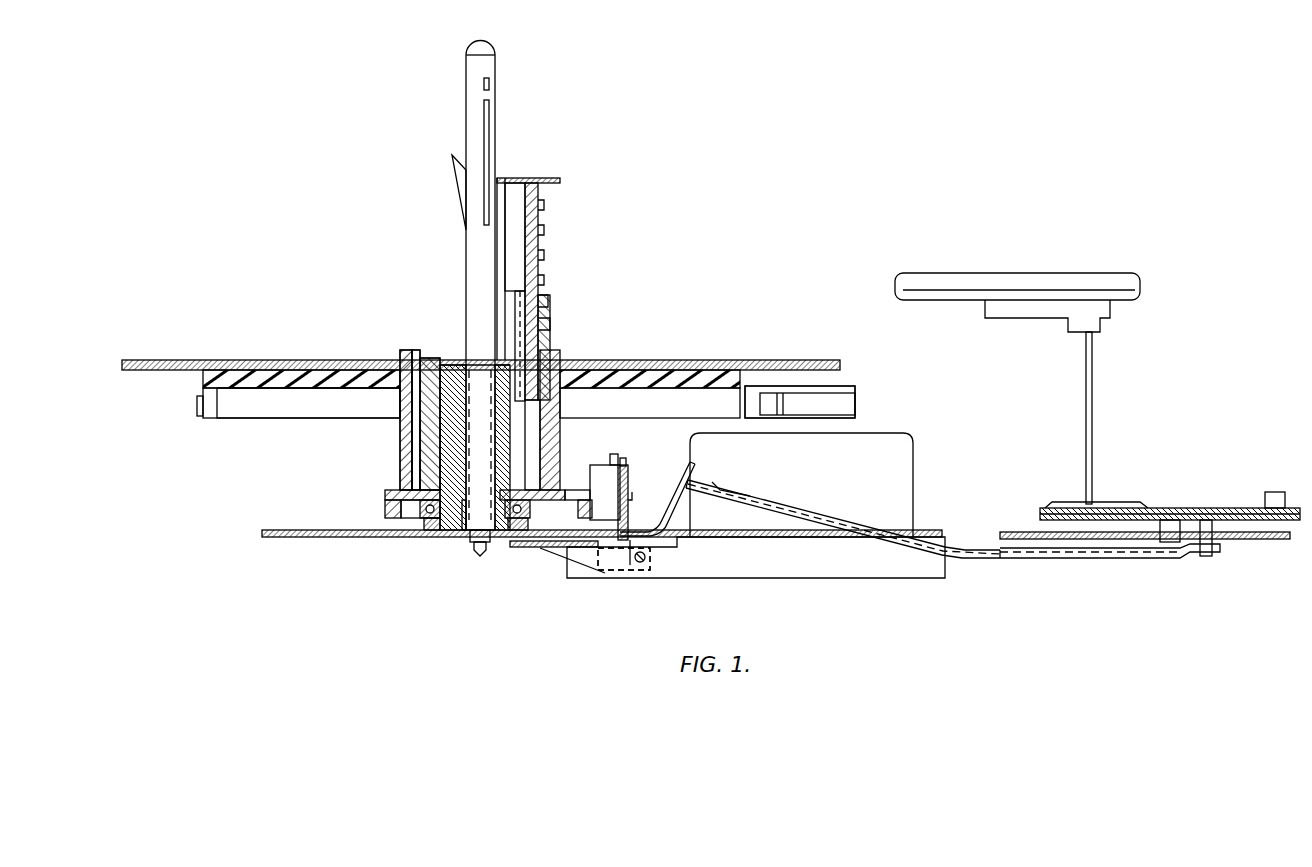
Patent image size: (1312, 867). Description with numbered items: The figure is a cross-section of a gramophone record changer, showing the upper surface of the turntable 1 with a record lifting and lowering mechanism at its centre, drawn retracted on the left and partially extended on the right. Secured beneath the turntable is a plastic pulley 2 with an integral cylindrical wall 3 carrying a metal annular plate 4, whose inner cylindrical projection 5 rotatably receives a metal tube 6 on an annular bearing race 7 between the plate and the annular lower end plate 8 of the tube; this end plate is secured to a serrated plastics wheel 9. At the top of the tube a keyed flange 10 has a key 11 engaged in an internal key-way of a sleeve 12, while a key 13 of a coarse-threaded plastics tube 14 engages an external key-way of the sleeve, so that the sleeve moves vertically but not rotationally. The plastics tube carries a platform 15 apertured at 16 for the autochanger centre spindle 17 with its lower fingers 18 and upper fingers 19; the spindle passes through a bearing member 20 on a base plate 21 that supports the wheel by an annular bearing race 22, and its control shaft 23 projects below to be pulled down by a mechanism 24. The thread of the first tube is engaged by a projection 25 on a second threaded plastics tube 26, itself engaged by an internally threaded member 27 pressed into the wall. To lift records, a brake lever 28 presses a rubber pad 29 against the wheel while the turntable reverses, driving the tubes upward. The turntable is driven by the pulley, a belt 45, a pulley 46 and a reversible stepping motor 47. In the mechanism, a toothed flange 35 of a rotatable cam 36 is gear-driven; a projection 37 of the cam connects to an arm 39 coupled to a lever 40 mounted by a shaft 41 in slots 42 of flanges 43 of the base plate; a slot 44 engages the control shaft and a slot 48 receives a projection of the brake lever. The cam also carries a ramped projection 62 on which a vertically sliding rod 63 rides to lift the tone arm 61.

The upper surface of the record player turntable 1 is at (262, 360).
The plastic pulley 2 is at (203, 378).
The cylindrical wall 3 is at (400, 450).
The metal annular plate 4 is at (392, 490).
The cylindrical projection 5 is at (462, 512).
The metal tube 6 is at (456, 430).
The annular bearing race 7 is at (412, 512).
The annular lower end plate 8 is at (555, 492).
The plastics wheel 9 is at (385, 506).
The flange 10 is at (445, 360).
The key 11 is at (516, 362).
The sleeve 12 is at (416, 360).
The key 13 is at (544, 334).
The plastics tube 14 is at (524, 226).
The platform 15 is at (552, 178).
The aperture 16 is at (505, 178).
The autochanger centre spindle 17 is at (462, 249).
The lower fingers 18 is at (452, 170).
The upper fingers 19 is at (490, 122).
The bearing member 20 is at (482, 500).
The base plate 21 is at (312, 537).
The annular bearing race 22 is at (432, 522).
The control shaft 23 is at (476, 545).
The mechanism 24 is at (804, 582).
The projection 25 is at (545, 302).
The second plastics tube 26 is at (552, 312).
The internally threaded member 27 is at (406, 365).
The brake lever 28 is at (596, 480).
The rubber pad 29 is at (620, 482).
The toothed flange 35 is at (1040, 512).
The rotatable cam 36 is at (1200, 506).
The projection 37 is at (1206, 558).
The arm 39 is at (992, 558).
The lever 40 is at (688, 510).
The shaft 41 is at (640, 565).
The slots 42 is at (600, 556).
The flanges 43 is at (705, 582).
The slot 44 is at (516, 548).
The belt 45 is at (197, 406).
The pulley 46 is at (848, 388).
The pulse-operated reversible stepping motor 47 is at (915, 462).
The slot 48 is at (630, 540).
The tone arm 61 is at (983, 272).
The projection 62 is at (1072, 500).
The rod 63 is at (1084, 396).